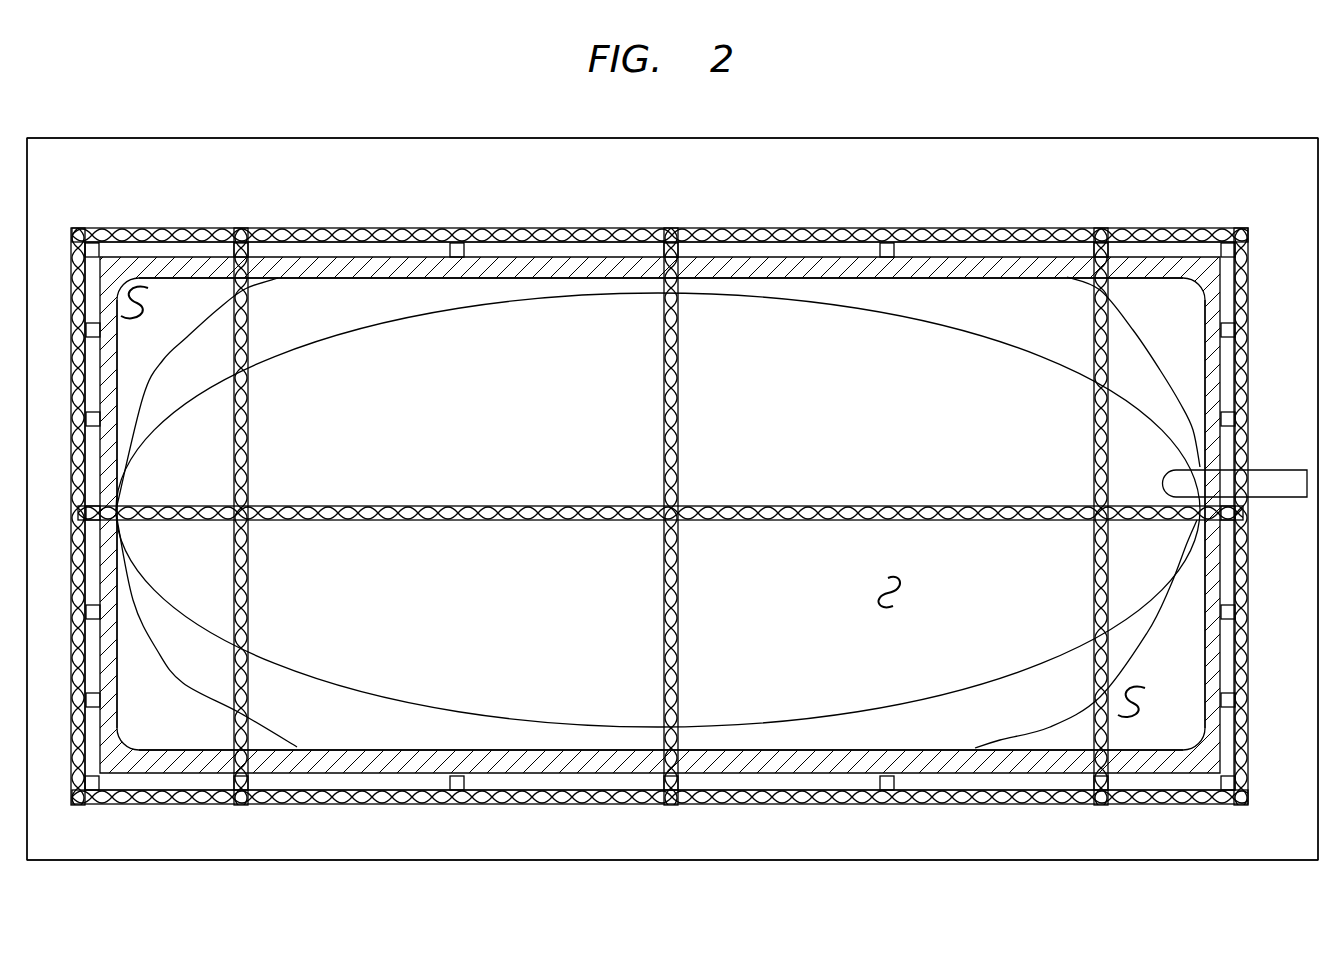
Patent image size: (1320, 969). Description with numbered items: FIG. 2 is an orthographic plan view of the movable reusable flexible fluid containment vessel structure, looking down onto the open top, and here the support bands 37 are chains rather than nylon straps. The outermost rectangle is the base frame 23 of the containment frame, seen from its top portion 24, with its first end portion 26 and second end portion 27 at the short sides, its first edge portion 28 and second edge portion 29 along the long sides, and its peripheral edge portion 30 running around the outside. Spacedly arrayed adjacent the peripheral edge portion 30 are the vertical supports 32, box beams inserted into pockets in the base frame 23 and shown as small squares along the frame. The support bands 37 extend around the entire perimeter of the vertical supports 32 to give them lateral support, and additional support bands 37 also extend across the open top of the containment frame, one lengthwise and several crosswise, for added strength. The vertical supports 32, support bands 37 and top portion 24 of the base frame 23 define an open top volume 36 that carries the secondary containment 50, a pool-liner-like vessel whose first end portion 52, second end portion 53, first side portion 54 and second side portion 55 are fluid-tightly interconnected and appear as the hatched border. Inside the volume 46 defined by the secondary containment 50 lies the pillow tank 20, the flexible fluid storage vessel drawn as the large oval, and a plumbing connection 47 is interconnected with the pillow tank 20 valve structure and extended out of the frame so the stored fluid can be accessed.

The pillow tank 20 is at (328, 360).
The base frame 23 is at (889, 126).
The top portion 24 is at (213, 184).
The first end portion 26 is at (33, 796).
The second end portion 27 is at (1318, 745).
The first edge portion 28 is at (905, 858).
The second edge portion 29 is at (358, 147).
The peripheral edge portion 30 is at (523, 155).
The vertical support 32 is at (102, 226).
The volume 36 is at (874, 582).
The support band 37 is at (1157, 226).
The volume 46 is at (145, 306).
The plumbing connection 47 is at (1298, 483).
The secondary containment 50 is at (858, 292).
The first end portion 52 is at (116, 693).
The second end portion 53 is at (1206, 352).
The first side portion 54 is at (1040, 748).
The second side portion 55 is at (965, 272).